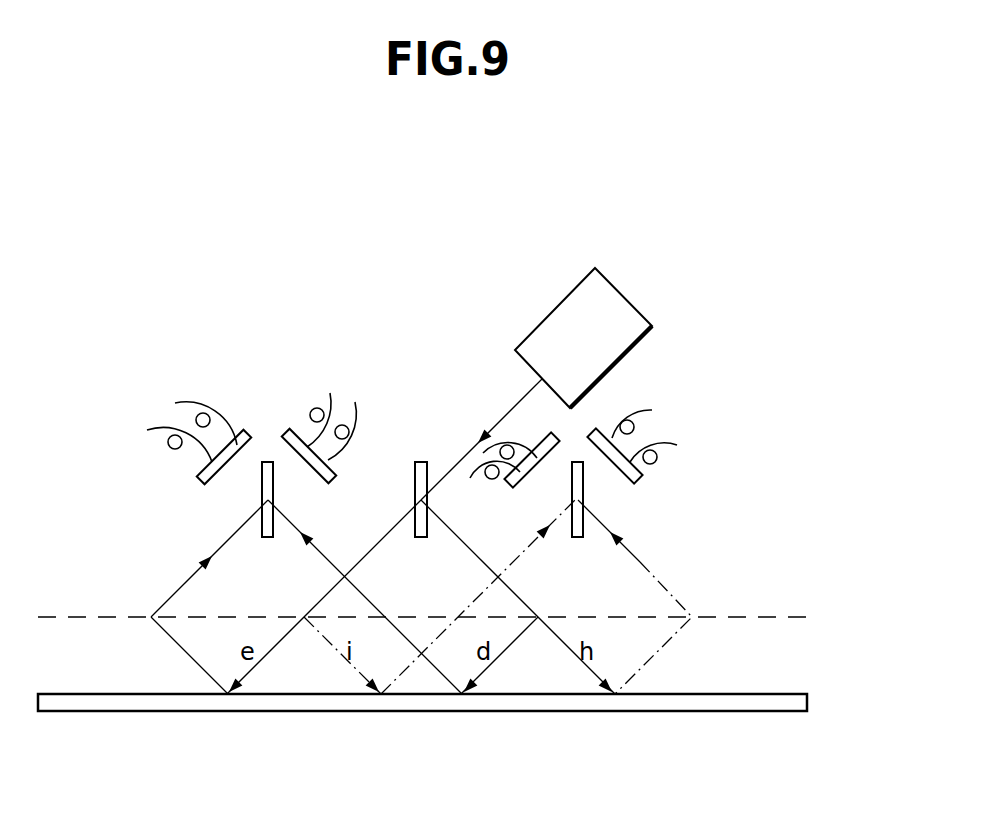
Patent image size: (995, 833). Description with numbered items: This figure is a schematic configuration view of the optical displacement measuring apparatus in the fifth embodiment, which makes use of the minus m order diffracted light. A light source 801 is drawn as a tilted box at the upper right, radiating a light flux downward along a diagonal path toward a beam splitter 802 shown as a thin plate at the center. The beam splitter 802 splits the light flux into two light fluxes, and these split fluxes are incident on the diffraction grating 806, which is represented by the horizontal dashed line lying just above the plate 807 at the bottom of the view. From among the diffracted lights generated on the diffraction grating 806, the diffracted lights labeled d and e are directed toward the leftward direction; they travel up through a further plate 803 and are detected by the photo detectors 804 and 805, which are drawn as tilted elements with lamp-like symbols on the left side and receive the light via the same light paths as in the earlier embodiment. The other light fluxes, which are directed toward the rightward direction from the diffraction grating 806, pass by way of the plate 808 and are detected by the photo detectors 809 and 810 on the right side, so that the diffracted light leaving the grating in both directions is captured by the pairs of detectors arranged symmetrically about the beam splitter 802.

The light source 801 is at (628, 298).
The beam splitter 802 is at (421, 462).
The beam splitter 803 is at (268, 462).
The photo detector 804 is at (200, 480).
The photo detector 805 is at (288, 433).
The diffraction grating 806 is at (753, 617).
The original plate 807 is at (773, 703).
The beam splitter 808 is at (578, 537).
The photo detector 809 is at (553, 437).
The photo detector 810 is at (638, 478).